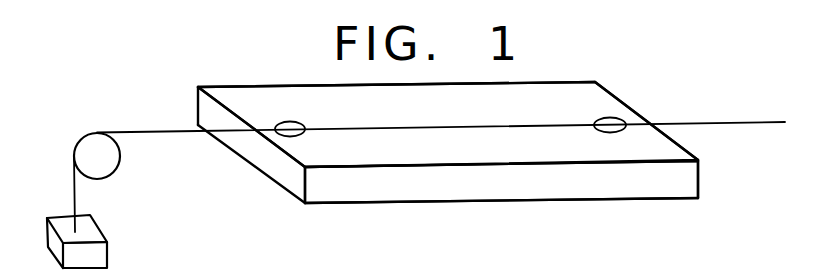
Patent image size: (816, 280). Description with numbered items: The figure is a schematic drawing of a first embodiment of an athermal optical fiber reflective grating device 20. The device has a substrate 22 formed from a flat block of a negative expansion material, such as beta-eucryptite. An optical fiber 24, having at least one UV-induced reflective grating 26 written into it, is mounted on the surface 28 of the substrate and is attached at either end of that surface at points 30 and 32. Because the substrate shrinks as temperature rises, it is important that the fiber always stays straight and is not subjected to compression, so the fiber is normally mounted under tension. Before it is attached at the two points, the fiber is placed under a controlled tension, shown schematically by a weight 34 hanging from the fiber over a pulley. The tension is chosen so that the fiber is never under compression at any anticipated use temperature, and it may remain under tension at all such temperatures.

The optical fiber reflective grating device 20 is at (485, 204).
The substrate 22 is at (590, 188).
The optical fiber 24 is at (173, 133).
The UV-induced reflective grating 26 is at (402, 128).
The surface 28 is at (675, 150).
The attachment point 30 is at (603, 120).
The attachment point 32 is at (297, 135).
The weight 34 is at (107, 250).